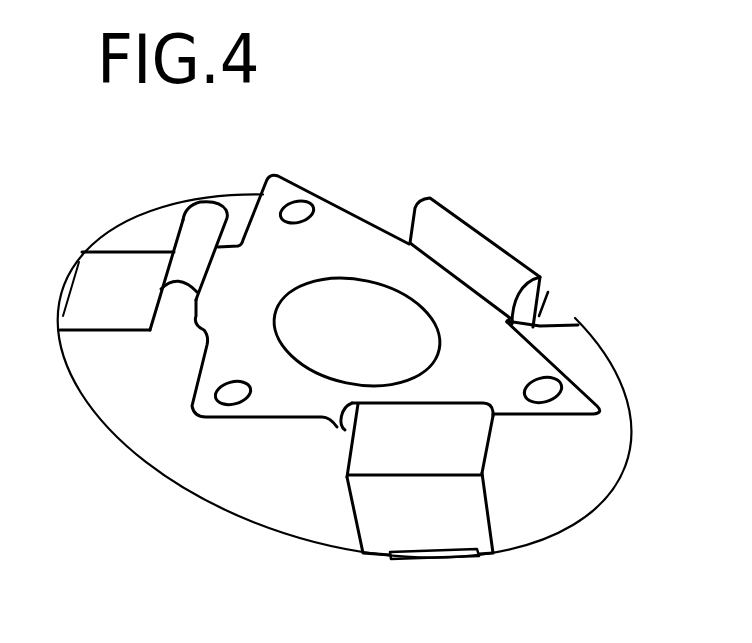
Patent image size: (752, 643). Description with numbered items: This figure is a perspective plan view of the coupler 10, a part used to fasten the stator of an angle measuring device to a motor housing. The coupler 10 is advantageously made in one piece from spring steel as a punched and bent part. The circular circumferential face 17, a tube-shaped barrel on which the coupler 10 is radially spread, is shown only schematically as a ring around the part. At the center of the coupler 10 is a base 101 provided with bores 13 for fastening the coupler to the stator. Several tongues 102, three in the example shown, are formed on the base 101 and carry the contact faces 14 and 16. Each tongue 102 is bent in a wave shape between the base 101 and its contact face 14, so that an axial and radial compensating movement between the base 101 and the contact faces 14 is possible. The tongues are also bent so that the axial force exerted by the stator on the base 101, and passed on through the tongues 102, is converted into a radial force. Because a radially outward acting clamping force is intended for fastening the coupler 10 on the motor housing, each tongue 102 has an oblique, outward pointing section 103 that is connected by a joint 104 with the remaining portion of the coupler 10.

The coupler 10 is at (502, 221).
The bores 13 is at (300, 211).
The contact face 14 is at (603, 358).
The contact face 16 is at (577, 312).
The circular circumferential face 17 is at (623, 463).
The base 101 is at (348, 251).
The tongues 102 is at (550, 315).
The oblique outward pointing section 103 is at (108, 283).
The joint 104 is at (150, 332).